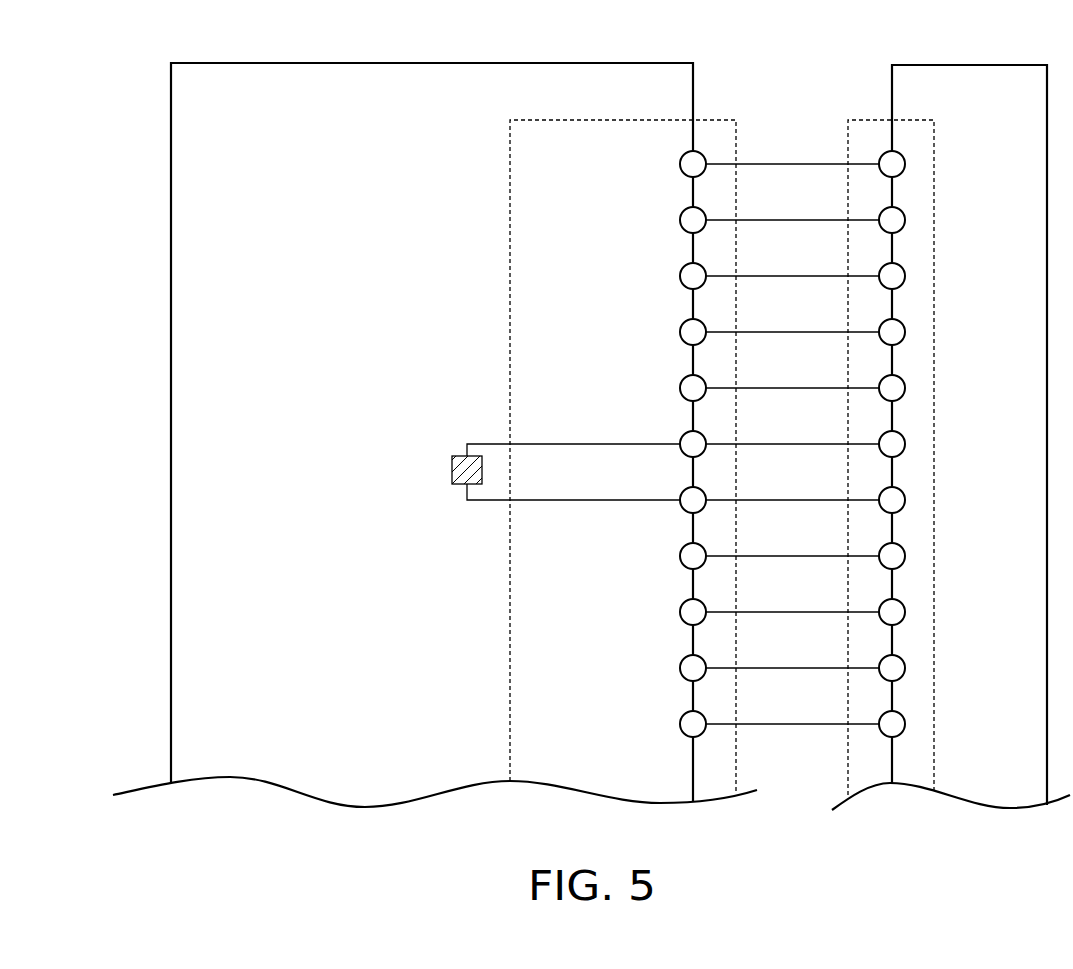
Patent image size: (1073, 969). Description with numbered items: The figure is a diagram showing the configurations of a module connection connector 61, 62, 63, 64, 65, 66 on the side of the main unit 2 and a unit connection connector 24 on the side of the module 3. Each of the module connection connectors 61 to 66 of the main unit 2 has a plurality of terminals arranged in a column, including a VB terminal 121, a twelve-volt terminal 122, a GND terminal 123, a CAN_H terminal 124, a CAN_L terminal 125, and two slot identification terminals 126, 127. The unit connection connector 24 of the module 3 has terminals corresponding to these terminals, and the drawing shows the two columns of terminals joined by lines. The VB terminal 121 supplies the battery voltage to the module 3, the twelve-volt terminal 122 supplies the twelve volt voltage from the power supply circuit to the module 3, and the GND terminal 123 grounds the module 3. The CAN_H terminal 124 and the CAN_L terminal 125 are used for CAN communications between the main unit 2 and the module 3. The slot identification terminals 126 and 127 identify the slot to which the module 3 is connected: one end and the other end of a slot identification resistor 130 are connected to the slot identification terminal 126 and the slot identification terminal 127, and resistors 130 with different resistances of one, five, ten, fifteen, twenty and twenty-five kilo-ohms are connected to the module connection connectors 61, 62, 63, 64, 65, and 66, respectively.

The main unit 2 is at (541, 63).
The module 3 is at (990, 65).
The unit connection connector 24 is at (852, 120).
The module connection connector 61 is at (707, 410).
The module connection connector 62 is at (707, 410).
The module connection connector 63 is at (707, 410).
The module connection connector 64 is at (707, 410).
The module connection connector 65 is at (707, 410).
The module connection connector 66 is at (720, 120).
The VB terminal 121 is at (683, 175).
The 12-V terminal 122 is at (683, 231).
The GND terminal 123 is at (683, 287).
The CAN_H terminal 124 is at (683, 343).
The CAN_L terminal 125 is at (683, 399).
The slot identification terminal 126 is at (683, 455).
The slot identification terminal 127 is at (683, 511).
The slot identification resistor 130 is at (452, 458).